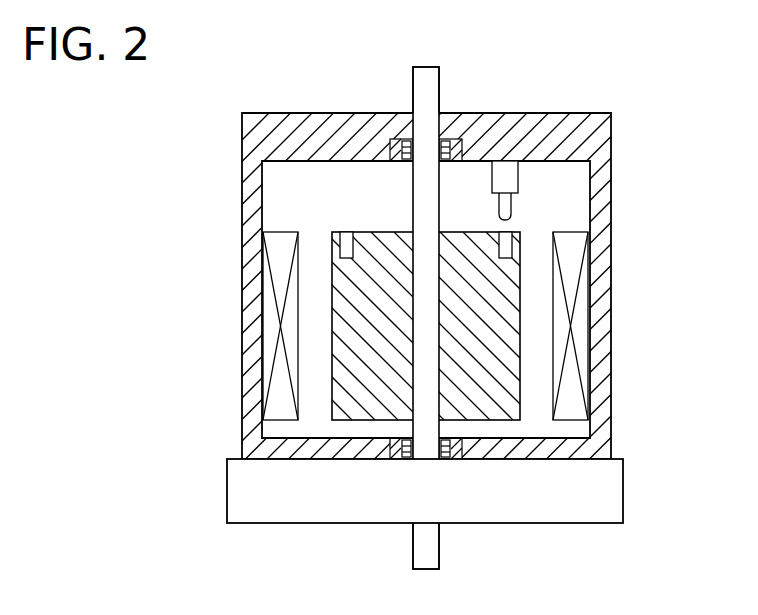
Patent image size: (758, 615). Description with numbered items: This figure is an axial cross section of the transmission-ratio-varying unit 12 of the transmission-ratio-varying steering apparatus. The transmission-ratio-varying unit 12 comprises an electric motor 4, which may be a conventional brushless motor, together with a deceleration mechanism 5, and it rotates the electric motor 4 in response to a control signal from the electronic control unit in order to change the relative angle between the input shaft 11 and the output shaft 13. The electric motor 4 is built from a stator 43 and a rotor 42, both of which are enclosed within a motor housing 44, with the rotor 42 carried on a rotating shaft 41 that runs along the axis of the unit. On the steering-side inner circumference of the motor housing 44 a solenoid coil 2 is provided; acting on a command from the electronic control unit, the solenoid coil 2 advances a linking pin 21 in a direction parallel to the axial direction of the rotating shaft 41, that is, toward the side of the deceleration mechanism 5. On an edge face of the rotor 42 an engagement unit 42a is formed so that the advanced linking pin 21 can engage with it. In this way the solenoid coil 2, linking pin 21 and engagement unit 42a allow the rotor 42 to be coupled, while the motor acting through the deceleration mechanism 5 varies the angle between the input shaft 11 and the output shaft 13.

The solenoid coil 2 is at (507, 175).
The electric motor 4 is at (379, 308).
The deceleration mechanism 5 is at (597, 517).
The input shaft 11 is at (434, 92).
The transmission-ratio-varying unit 12 is at (379, 319).
The output shaft 13 is at (434, 558).
The linking pin 21 is at (510, 208).
The rotating shaft 41 is at (428, 193).
The rotor 42 is at (495, 395).
The engagement unit 42a is at (347, 243).
The stator 43 is at (583, 292).
The motor housing 44 is at (593, 147).